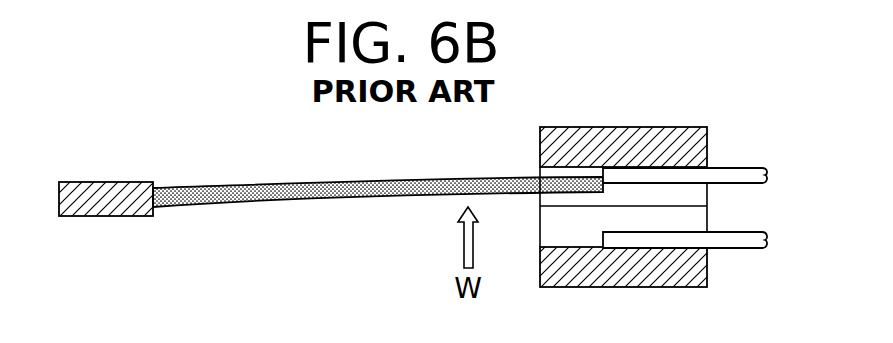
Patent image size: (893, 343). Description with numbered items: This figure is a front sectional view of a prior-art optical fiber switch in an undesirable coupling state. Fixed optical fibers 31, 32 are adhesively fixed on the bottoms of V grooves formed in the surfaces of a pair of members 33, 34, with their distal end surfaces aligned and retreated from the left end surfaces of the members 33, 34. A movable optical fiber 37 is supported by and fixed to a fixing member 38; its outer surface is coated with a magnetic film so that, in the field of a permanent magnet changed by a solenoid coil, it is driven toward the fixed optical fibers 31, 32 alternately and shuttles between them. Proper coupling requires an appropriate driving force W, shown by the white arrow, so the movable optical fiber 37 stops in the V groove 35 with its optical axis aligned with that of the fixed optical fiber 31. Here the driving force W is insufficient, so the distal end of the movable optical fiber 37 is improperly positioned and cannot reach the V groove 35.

The fixed optical fiber 31 is at (757, 174).
The fixed optical fiber 32 is at (733, 248).
The member 33 is at (652, 132).
The member 34 is at (613, 277).
The V groove 35 is at (550, 168).
The movable optical fiber 37 is at (306, 182).
The fixing member 38 is at (99, 181).